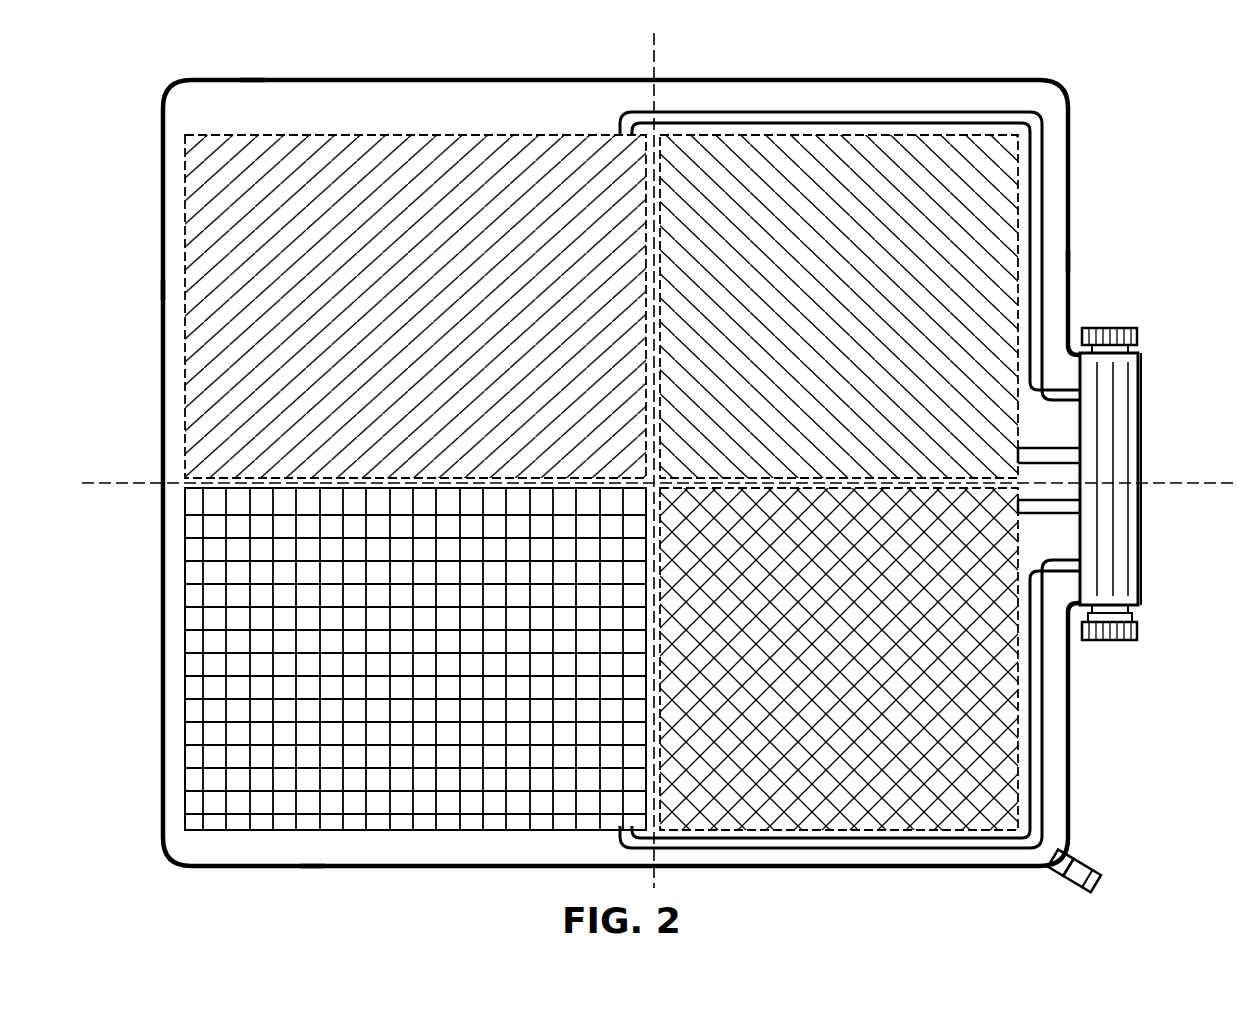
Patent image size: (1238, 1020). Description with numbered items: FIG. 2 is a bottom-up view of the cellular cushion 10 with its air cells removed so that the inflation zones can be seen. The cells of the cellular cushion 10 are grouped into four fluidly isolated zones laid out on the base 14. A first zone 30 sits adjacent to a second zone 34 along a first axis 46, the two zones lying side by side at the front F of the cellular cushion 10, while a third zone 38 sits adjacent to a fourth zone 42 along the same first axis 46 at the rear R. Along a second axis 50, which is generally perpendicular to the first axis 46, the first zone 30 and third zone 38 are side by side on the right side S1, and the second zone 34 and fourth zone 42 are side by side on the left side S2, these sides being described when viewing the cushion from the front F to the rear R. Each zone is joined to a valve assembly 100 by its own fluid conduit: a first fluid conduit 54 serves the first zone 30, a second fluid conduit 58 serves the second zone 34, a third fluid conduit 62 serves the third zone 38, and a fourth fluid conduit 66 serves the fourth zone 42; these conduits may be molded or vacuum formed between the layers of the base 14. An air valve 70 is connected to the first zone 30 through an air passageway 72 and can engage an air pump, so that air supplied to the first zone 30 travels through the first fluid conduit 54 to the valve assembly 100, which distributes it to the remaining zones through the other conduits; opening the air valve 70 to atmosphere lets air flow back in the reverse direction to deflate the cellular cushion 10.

The cellular cushion 10 is at (1104, 115).
The base 14 is at (1058, 200).
The first zone 30 is at (976, 717).
The second zone 34 is at (891, 204).
The third zone 38 is at (272, 711).
The fourth zone 42 is at (364, 206).
The first axis 46 is at (657, 66).
The second axis 50 is at (110, 481).
The first fluid conduit 54 is at (1048, 505).
The second fluid conduit 58 is at (1045, 455).
The third fluid conduit 62 is at (1032, 684).
The fourth fluid conduit 66 is at (808, 111).
The air valve 70 is at (1097, 886).
The air passageway 72 is at (1072, 858).
The valve assembly 100 is at (1137, 386).
The rear R is at (162, 290).
The front F is at (1070, 262).
The right side S1 is at (312, 868).
The left side S2 is at (252, 80).